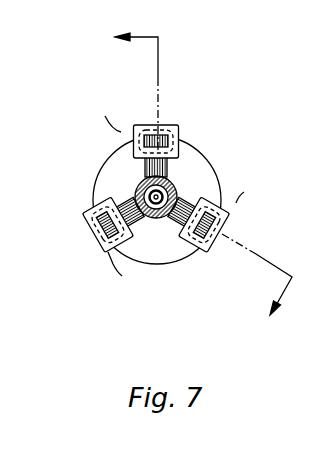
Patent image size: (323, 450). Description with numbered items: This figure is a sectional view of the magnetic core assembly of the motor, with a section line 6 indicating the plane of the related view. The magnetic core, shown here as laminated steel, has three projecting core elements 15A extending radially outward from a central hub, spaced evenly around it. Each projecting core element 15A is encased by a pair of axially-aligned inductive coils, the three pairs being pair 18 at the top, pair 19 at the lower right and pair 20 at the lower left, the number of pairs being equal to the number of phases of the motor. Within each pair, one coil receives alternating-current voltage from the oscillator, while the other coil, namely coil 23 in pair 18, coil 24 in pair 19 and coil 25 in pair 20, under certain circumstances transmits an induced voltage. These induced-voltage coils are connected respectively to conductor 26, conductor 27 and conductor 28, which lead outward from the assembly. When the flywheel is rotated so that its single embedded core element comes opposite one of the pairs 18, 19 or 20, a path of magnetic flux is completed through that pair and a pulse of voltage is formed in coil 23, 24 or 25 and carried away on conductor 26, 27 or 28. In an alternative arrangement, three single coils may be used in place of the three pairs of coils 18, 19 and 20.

The section line 6- 6 is at (203, 169).
The pair of inductive coils 18 is at (177, 148).
The pair of inductive coils 19 is at (227, 213).
The pair of inductive coils 20 is at (82, 211).
The projecting core element 15A is at (100, 229).
The coil 23 is at (168, 151).
The coil 24 is at (184, 236).
The coil 25 is at (108, 200).
The conductor 26 is at (113, 129).
The conductor 27 is at (236, 203).
The conductor 28 is at (113, 265).